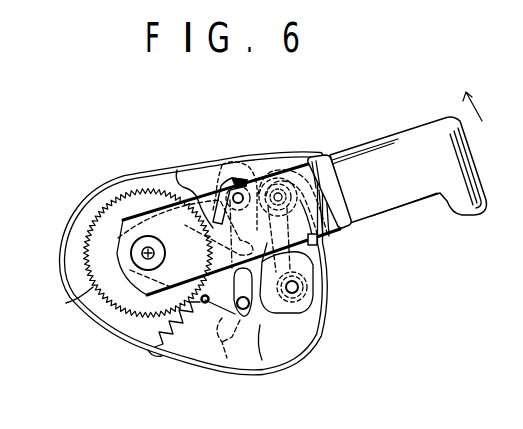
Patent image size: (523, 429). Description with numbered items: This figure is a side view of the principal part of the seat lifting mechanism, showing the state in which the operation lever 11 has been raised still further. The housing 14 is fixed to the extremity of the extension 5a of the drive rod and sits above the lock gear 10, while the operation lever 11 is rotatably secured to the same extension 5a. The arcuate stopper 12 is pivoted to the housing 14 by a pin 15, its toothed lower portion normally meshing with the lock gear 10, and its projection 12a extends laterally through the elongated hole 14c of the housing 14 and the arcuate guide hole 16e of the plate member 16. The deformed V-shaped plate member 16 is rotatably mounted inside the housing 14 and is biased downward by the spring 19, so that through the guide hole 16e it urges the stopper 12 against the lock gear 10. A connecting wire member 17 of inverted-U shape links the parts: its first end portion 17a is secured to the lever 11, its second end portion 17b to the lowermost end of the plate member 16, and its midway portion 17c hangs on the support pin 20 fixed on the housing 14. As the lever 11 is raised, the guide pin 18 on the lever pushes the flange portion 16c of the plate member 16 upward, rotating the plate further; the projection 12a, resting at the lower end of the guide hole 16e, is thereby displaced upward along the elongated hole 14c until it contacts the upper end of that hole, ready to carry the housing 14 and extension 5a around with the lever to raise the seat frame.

The extension of the drive rod 5a is at (143, 253).
The lock gear 10 is at (64, 303).
The operation lever 11 is at (398, 148).
The stopper 12 is at (268, 323).
The projection of the stopper 12a is at (251, 291).
The housing 14 is at (103, 189).
The elongated hole 14c is at (227, 358).
The pin 15 is at (241, 184).
The plate member 16 is at (309, 311).
The flange portion 16c is at (177, 170).
The arcuate guide hole 16e is at (272, 340).
The connecting wire member 17 is at (340, 231).
The first end portion of the wire member 17a is at (328, 262).
The second end portion of the wire member 17b is at (304, 289).
The midway portion of the wire member 17c is at (281, 176).
The guide pin 18 is at (214, 203).
The spring 19 is at (156, 355).
The support pin 20 is at (303, 166).